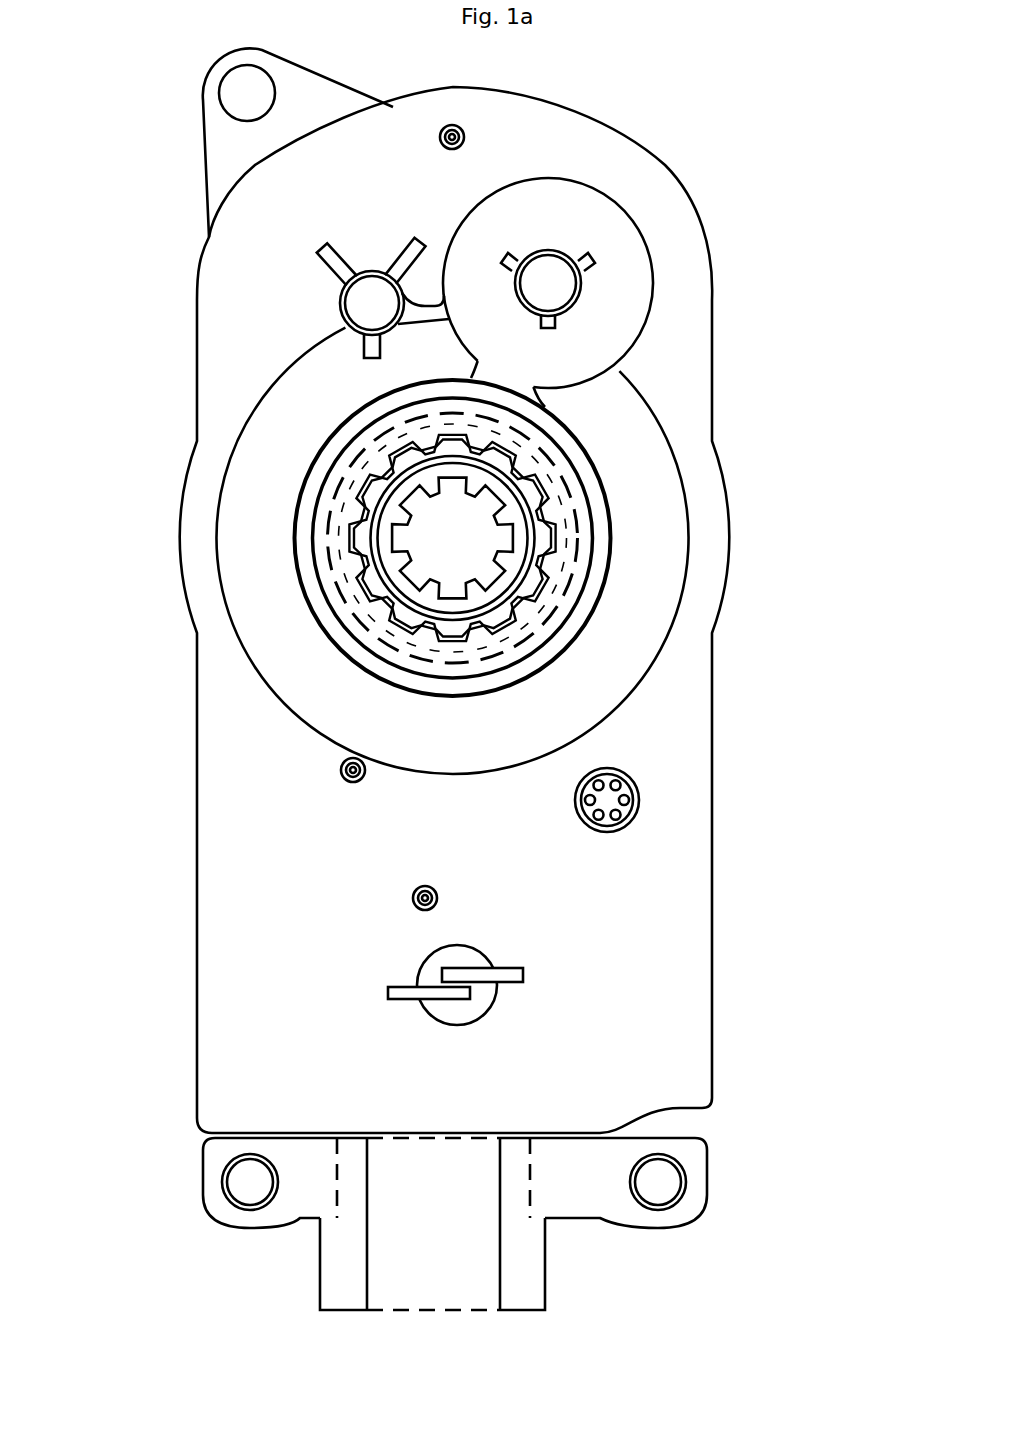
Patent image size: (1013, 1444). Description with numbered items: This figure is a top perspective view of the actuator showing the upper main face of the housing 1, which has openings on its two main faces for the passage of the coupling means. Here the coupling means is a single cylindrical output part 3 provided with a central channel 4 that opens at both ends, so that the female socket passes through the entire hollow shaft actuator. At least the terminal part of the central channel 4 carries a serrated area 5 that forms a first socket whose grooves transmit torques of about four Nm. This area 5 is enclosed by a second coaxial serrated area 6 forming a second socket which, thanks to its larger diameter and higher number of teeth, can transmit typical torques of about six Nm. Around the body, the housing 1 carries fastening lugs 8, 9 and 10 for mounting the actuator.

The housing 1 is at (623, 148).
The cylindrical output part 3 is at (540, 480).
The central channel 4 is at (472, 535).
The serrated area 5 is at (398, 505).
The second coaxial serrated area 6 is at (358, 557).
The fastening lug 8 is at (227, 72).
The fastening lug 9 is at (230, 1210).
The fastening lug 10 is at (673, 1189).